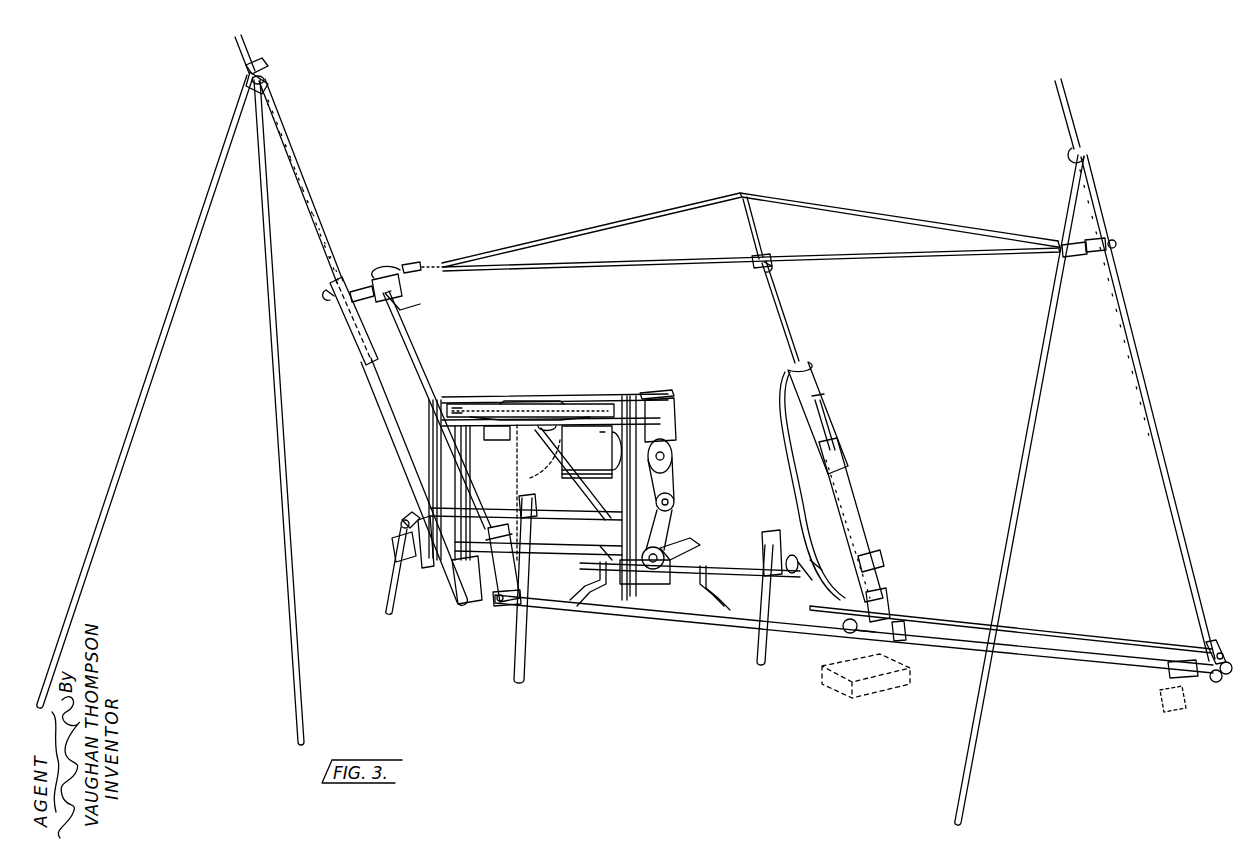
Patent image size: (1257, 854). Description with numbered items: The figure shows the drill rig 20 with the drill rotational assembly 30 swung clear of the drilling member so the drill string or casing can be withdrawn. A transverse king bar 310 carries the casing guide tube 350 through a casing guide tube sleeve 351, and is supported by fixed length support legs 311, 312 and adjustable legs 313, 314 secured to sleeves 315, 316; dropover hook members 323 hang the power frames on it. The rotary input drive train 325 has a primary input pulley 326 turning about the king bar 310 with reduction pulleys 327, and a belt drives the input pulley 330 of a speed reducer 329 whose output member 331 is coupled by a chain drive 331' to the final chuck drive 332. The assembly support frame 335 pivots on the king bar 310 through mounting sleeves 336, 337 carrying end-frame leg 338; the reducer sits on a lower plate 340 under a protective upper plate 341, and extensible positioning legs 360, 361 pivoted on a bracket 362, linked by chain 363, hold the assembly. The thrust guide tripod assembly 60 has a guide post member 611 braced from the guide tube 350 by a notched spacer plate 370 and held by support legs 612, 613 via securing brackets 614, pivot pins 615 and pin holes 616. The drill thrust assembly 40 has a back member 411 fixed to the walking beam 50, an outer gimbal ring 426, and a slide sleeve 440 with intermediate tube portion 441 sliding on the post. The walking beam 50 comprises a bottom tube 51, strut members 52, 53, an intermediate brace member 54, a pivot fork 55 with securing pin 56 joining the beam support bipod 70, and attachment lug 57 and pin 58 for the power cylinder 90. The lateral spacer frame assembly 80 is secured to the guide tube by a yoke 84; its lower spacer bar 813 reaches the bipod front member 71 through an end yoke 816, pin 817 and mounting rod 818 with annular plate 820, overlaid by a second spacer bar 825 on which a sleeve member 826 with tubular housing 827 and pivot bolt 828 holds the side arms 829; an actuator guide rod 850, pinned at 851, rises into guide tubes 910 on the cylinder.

The drill rig 20 is at (426, 140).
The drill rotational assembly 30 is at (523, 370).
The drill thrust assembly 40 is at (385, 233).
The walking beam assembly 50 is at (724, 280).
The bottom tube 51 is at (852, 262).
The strut member 52 is at (556, 238).
The strut member 53 is at (928, 222).
The intermediate brace member 54 is at (745, 230).
The pivot fork 55 is at (1118, 244).
The securing pin 56 is at (1100, 254).
The attachment lug 57 is at (750, 272).
The attachment pin 58 is at (762, 275).
The thrust guide tripod assembly 60 is at (244, 167).
The beam support bipod 70 is at (1138, 160).
The bipod front member 71 is at (1140, 352).
The lateral spacer frame assembly 80 is at (930, 598).
The yoke 84 is at (504, 608).
The power cylinder 90 is at (840, 388).
The king bar 310 is at (570, 556).
The fixed length support leg 311 is at (392, 602).
The fixed length support leg 312 is at (740, 664).
The adjustable leg 313 is at (398, 522).
The adjustable leg 314 is at (770, 582).
The sleeve 315 is at (392, 548).
The sleeve 316 is at (780, 548).
The dropover hook member 323 is at (592, 582).
The rotary input drive train 325 is at (700, 482).
The primary input pulley 326 is at (660, 606).
The reduction pulleys 327 is at (645, 581).
The speed reducer 329 is at (592, 451).
The input pulley 330 is at (678, 450).
The output member 331 is at (546, 376).
The chain drive 331' is at (571, 370).
The final chuck drive 332 is at (500, 440).
The assembly support frame 335 is at (664, 386).
The mounting sleeve 336 is at (426, 556).
The mounting sleeve 337 is at (612, 612).
The end-frame leg 338 is at (672, 400).
The lower plate 340 is at (676, 420).
The upper plate 341 is at (462, 396).
The casing guide tube 350 is at (494, 582).
The casing guide tube sleeve 351 is at (532, 528).
The assembly positioning leg 360 is at (590, 514).
The assembly positioning leg 361 is at (516, 678).
The bracket 362 is at (587, 453).
The interconnecting chain 363 is at (550, 488).
The notched spacer plate 370 is at (466, 590).
The back member 411 is at (416, 262).
The outer gimbal ring 426 is at (393, 270).
The slide sleeve 440 is at (352, 330).
The intermediate tube portion 441 is at (355, 285).
The guide post member 611 is at (295, 160).
The support leg 612 is at (275, 430).
The support leg 613 is at (125, 440).
The securing bracket 614 is at (290, 70).
The pivot pin 615 is at (266, 63).
The transverse pin holes 616 is at (308, 202).
The lower spacer bar 813 is at (1066, 668).
The end yoke 816 is at (1216, 684).
The pin 817 is at (1208, 688).
The bipod mounting rod 818 is at (1218, 648).
The annular plate 820 is at (1154, 708).
The second spacer bar 825 is at (1070, 646).
The sleeve member 826 is at (906, 630).
The transverse tubular housing 827 is at (884, 608).
The pivot bolt 828 is at (846, 632).
The side arms 829 is at (824, 486).
The actuator guide rod 850 is at (862, 504).
The pivot pin 851 is at (884, 648).
The guide tube 910 is at (884, 560).